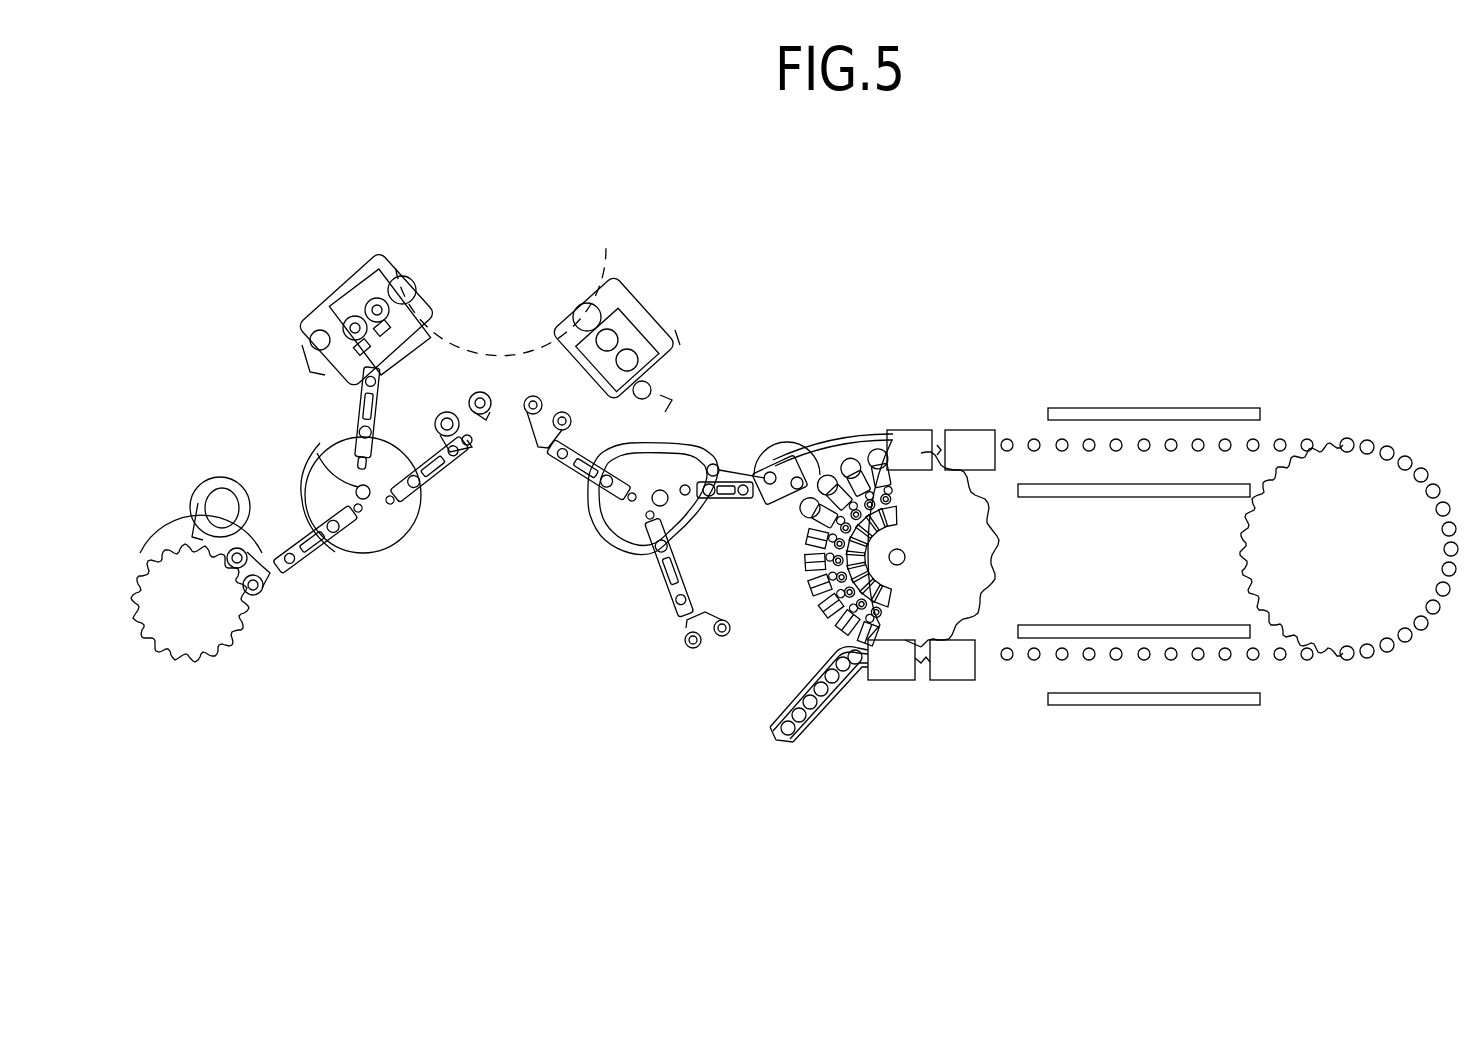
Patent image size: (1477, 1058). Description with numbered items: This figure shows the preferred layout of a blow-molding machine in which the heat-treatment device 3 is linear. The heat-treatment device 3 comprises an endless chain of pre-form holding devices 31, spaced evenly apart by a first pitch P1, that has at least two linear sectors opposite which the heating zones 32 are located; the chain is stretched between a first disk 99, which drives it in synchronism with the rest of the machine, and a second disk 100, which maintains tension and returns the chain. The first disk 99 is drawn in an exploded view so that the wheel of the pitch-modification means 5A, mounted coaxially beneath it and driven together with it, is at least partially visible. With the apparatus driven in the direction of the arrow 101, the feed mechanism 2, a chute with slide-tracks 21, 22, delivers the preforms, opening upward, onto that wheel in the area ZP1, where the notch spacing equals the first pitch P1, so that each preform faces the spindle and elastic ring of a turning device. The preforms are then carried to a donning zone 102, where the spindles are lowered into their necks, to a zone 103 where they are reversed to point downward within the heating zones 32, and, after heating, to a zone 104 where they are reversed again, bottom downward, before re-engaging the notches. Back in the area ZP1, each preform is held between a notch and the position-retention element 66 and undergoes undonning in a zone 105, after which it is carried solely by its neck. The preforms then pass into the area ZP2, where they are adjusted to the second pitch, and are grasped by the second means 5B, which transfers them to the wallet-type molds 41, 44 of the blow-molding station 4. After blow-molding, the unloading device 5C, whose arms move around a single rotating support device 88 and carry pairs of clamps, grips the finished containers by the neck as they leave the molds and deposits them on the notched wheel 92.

The feed mechanism 2 is at (845, 706).
The heat-treatment device 3 is at (1212, 571).
The blow-molding station 4 is at (660, 230).
The slide-track 21 is at (775, 712).
The slide-track 22 is at (807, 708).
The pre-form holding device 31 is at (1453, 533).
The heating zone 32 is at (1185, 432).
The wallet-type mold 41 is at (612, 297).
The wallet-type mold 44 is at (317, 303).
The position-retention element 66 is at (855, 437).
The support device 88 is at (323, 463).
The wheel 92 is at (218, 627).
The first disk 99 is at (953, 591).
The second disk 100 is at (1370, 566).
The arrow 101 is at (1260, 735).
The donning zone 102 is at (897, 663).
The reversing zone 103 is at (943, 660).
The reversing zone 104 is at (962, 453).
The undonning zone 105 is at (917, 443).
The pitch-modification means 5A is at (803, 607).
The second means 5B is at (596, 572).
The unloading device 5C is at (369, 576).
The area ZP1 is at (718, 548).
The area ZP2 is at (858, 447).
The first pitch P1 is at (1000, 763).